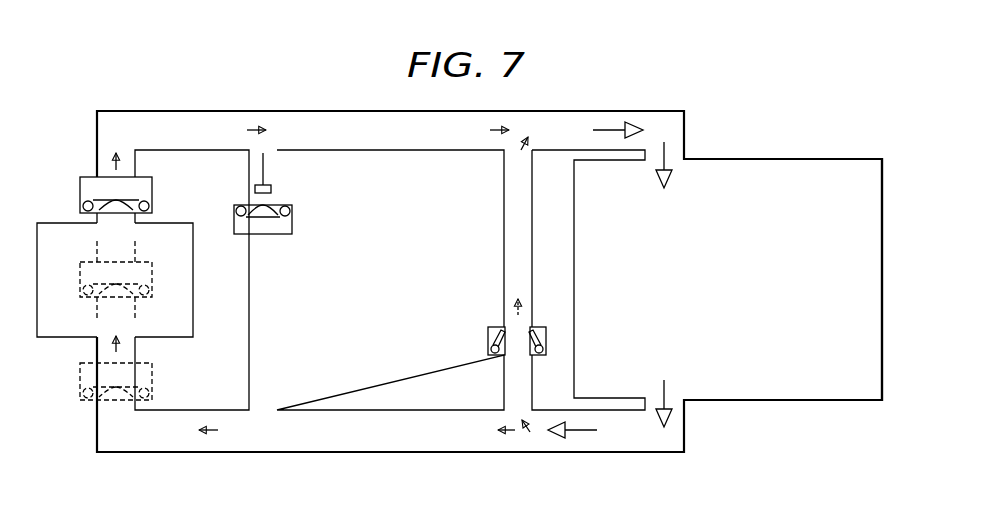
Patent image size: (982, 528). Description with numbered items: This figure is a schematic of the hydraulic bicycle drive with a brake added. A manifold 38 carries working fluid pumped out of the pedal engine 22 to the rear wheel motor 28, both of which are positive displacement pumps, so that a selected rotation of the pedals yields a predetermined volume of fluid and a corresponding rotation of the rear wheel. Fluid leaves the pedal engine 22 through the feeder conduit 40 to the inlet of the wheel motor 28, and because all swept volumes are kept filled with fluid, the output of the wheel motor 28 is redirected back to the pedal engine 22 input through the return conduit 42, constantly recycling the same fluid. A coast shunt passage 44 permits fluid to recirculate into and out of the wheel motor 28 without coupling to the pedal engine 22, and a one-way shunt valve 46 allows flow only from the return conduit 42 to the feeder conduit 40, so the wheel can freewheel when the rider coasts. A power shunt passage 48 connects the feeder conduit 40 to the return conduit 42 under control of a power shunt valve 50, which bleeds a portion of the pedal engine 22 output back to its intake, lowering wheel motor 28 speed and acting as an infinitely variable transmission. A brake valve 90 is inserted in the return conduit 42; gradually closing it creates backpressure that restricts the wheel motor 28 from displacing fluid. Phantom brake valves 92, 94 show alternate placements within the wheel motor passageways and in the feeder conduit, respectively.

The pedal engine 22 is at (875, 275).
The rear wheel motor 28 is at (60, 222).
The manifold 38 is at (548, 100).
The feeder conduit 40 is at (370, 440).
The return conduit 42 is at (318, 130).
The coast shunt passage 44 is at (276, 308).
The shunt valve 46 is at (283, 235).
The power shunt passage 48 is at (505, 218).
The power shunt valve 50 is at (507, 308).
The brake valve 90 is at (75, 175).
The brake valve (phantom, within wheel motor) 92 is at (76, 300).
The brake valve (phantom, in feeder conduit) 94 is at (80, 405).